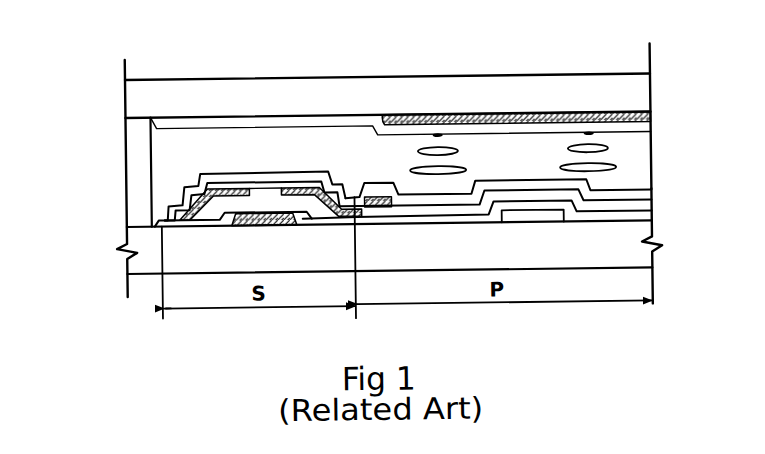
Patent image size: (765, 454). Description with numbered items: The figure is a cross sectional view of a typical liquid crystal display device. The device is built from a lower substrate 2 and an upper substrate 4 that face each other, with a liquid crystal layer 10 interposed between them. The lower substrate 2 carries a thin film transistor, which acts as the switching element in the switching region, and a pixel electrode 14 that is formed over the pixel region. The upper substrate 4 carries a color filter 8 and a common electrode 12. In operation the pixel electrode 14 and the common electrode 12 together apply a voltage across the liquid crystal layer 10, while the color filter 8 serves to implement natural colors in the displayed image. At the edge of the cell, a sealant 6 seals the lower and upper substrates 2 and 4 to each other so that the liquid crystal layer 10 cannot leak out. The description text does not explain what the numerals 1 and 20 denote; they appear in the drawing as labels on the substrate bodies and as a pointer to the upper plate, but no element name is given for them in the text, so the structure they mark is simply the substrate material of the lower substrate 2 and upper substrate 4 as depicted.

The glass substrate 1 is at (443, 262).
The lower substrate 2 is at (660, 198).
The upper substrate 4 is at (660, 78).
The sealant 6 is at (130, 170).
The color filter 8 is at (546, 121).
The liquid crystal layer 10 is at (660, 136).
The common electrode 12 is at (629, 131).
The pixel electrode 14 is at (654, 211).
The upper glass substrate 20 is at (257, 72).